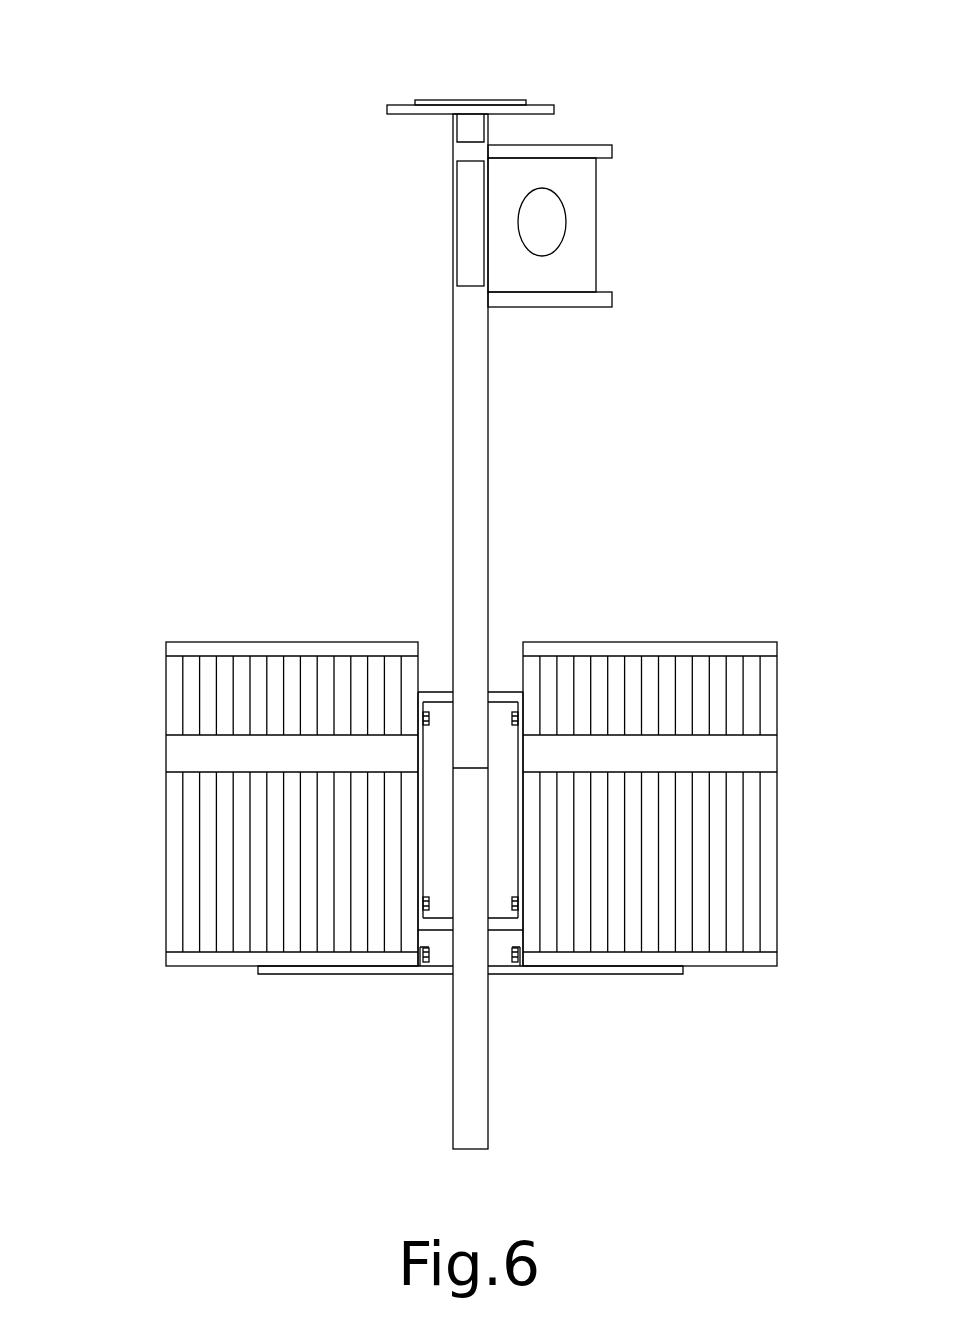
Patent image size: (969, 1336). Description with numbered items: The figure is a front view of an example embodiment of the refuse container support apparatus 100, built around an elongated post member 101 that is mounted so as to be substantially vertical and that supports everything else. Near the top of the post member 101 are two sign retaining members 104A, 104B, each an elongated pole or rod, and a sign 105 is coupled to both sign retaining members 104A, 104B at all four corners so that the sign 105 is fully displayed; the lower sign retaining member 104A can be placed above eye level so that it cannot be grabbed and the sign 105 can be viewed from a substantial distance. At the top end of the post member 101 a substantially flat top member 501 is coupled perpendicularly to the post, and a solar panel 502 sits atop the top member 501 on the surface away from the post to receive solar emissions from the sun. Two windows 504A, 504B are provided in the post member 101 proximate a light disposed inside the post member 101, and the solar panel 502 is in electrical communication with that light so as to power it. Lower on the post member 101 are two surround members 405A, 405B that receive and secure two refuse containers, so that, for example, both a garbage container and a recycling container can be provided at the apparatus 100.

The refuse container support apparatus 100 is at (250, 315).
The elongated post member 101 is at (472, 540).
The lower sign retaining member 104A is at (605, 300).
The upper sign retaining member 104B is at (603, 145).
The sign 105 is at (580, 213).
The surround member 405A is at (166, 752).
The surround member 405B is at (777, 692).
The top member 501 is at (542, 105).
The solar panel 502 is at (473, 100).
The window 504A is at (468, 247).
The window 504B is at (463, 132).